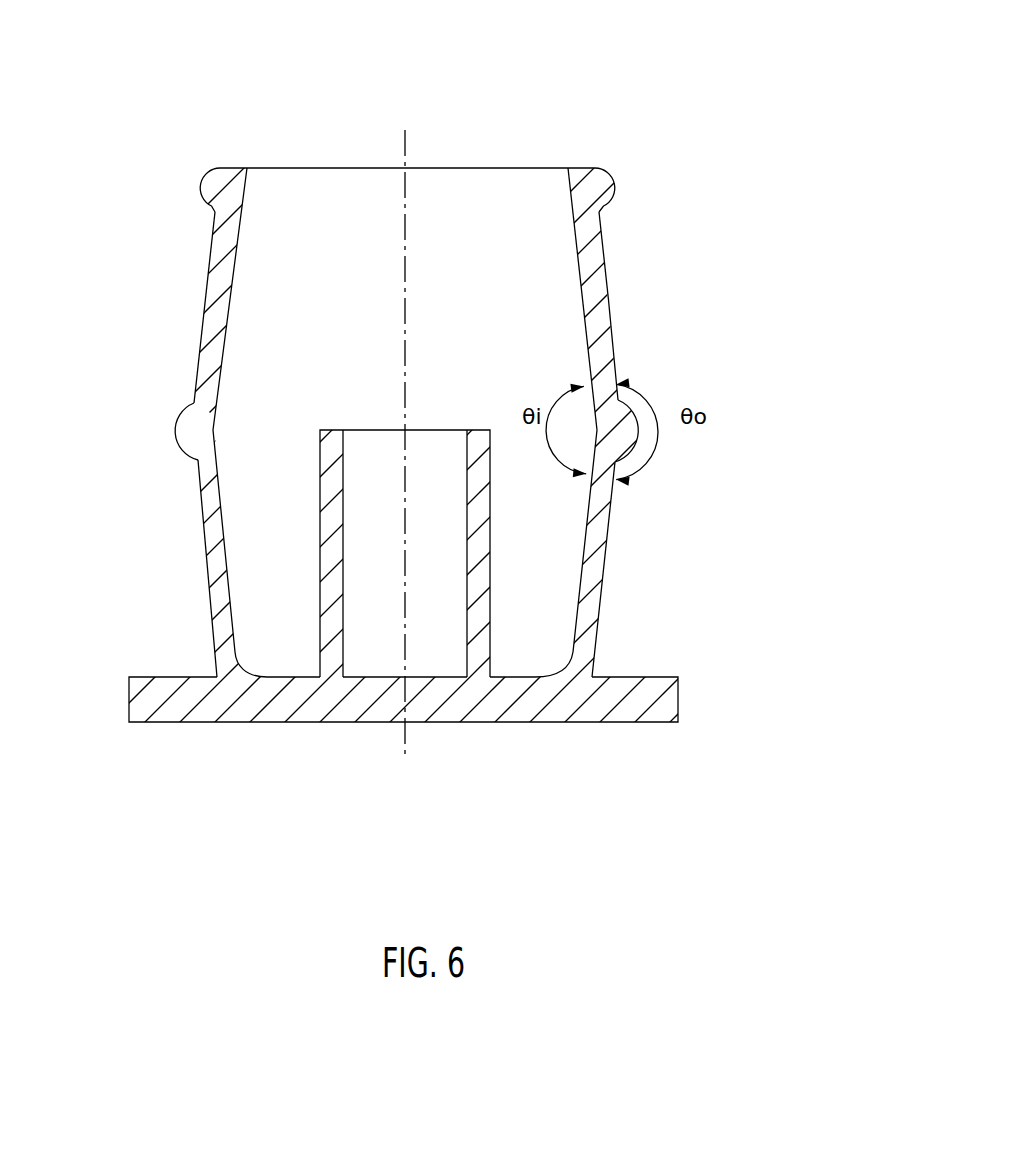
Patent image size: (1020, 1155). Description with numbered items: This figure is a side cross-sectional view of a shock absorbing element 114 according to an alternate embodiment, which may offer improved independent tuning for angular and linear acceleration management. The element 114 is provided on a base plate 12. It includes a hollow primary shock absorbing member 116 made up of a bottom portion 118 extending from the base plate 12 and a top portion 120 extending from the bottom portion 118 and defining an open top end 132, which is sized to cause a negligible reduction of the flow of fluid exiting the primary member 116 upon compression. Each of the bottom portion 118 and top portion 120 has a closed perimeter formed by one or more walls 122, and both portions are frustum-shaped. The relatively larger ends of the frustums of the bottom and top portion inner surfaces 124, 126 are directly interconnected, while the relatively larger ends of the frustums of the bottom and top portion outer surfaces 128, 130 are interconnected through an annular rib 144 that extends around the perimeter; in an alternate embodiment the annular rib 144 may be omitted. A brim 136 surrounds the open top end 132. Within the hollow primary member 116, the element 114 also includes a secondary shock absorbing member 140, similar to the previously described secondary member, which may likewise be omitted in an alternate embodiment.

The base plate 12 is at (667, 700).
The shock absorbing element 114 is at (676, 117).
The primary shock absorbing member 116 is at (607, 242).
The bottom portion 118 is at (598, 548).
The top portion 120 is at (602, 295).
The wall 122 is at (602, 347).
The inner surface of bottom portion 124 is at (577, 587).
The inner surface of top portion 126 is at (585, 315).
The outer surface of bottom portion 128 is at (200, 527).
The outer surface of top portion 130 is at (205, 303).
The open top end 132 is at (342, 200).
The brim 136 is at (198, 183).
The secondary shock absorbing member 140 is at (312, 428).
The annular rib 144 is at (180, 410).